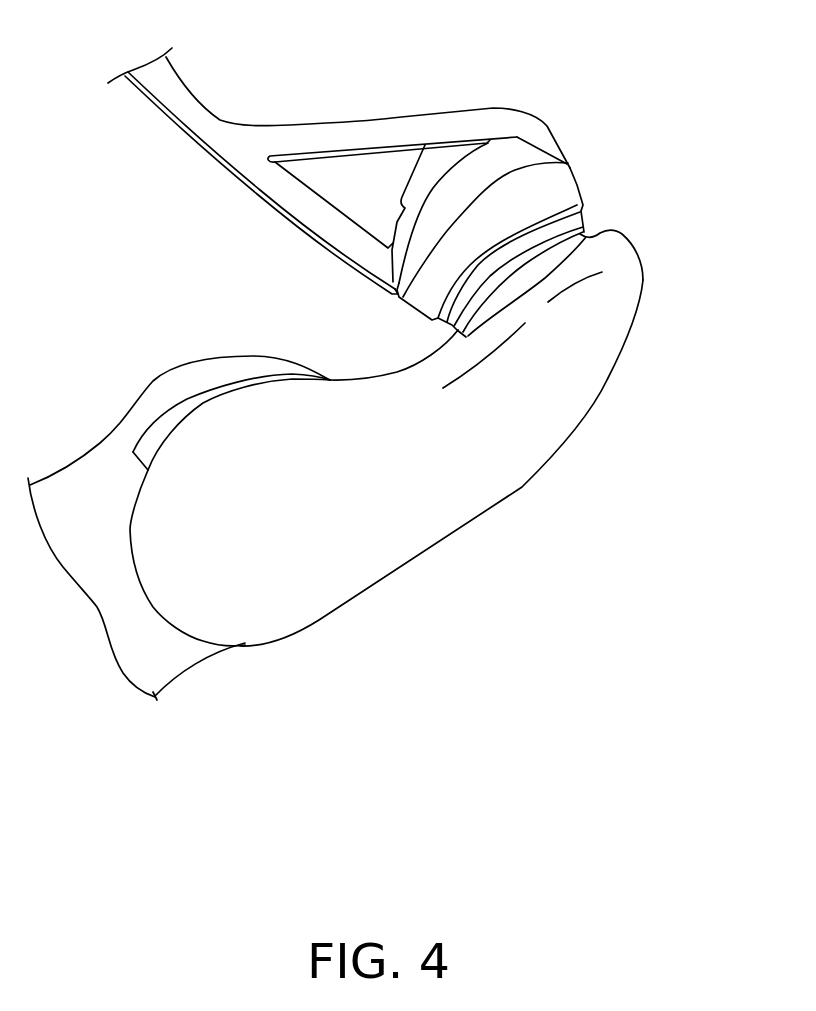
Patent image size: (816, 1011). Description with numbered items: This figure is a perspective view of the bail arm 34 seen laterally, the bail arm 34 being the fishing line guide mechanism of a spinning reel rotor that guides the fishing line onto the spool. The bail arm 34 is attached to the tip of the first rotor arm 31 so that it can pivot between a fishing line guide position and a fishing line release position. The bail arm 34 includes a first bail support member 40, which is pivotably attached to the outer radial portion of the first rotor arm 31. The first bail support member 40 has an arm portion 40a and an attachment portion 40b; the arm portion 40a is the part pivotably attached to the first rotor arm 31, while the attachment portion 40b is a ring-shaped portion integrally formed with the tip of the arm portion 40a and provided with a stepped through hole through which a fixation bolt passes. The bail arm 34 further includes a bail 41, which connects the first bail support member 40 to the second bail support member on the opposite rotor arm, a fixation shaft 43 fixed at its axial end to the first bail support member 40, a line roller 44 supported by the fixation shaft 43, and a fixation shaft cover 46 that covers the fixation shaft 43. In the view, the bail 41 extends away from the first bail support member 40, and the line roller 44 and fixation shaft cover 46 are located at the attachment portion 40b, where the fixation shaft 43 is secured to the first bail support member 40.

The first rotor arm 31 is at (165, 658).
The bail arm 34 is at (654, 250).
The first bail support member 40 is at (480, 384).
The arm portion 40a is at (548, 438).
The attachment portion 40b is at (622, 250).
The bail 41 is at (202, 125).
The fixation shaft 43 is at (435, 158).
The line roller 44 is at (585, 236).
The fixation shaft cover 46 is at (575, 183).